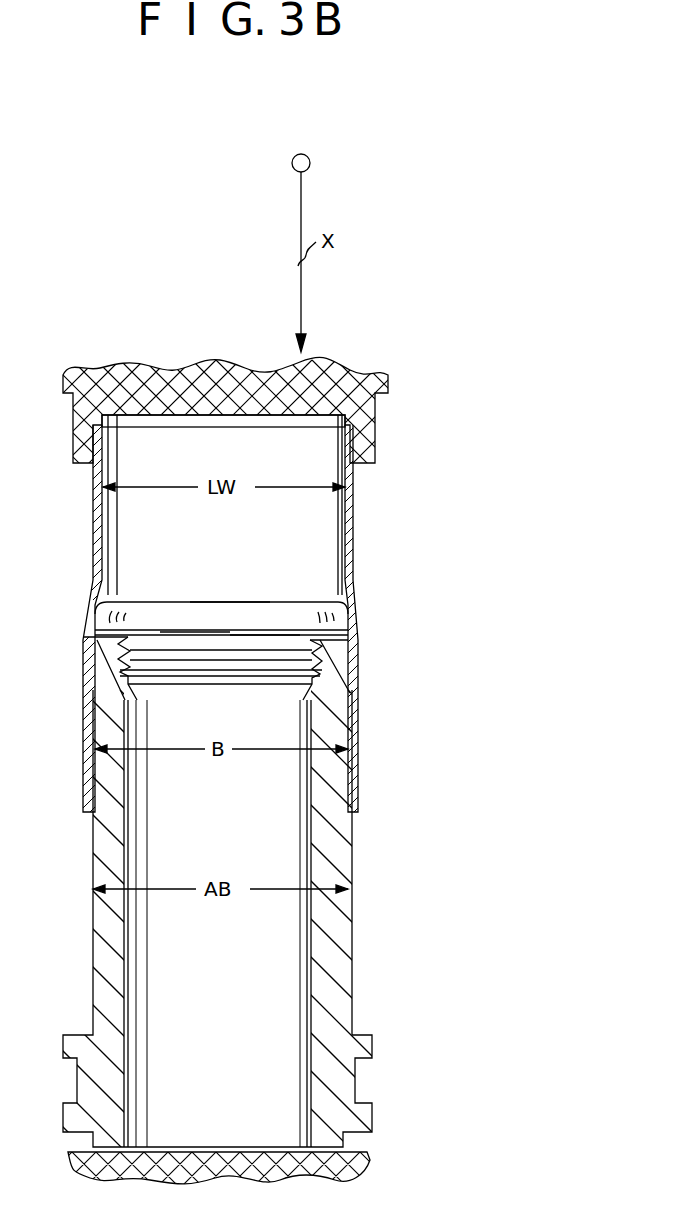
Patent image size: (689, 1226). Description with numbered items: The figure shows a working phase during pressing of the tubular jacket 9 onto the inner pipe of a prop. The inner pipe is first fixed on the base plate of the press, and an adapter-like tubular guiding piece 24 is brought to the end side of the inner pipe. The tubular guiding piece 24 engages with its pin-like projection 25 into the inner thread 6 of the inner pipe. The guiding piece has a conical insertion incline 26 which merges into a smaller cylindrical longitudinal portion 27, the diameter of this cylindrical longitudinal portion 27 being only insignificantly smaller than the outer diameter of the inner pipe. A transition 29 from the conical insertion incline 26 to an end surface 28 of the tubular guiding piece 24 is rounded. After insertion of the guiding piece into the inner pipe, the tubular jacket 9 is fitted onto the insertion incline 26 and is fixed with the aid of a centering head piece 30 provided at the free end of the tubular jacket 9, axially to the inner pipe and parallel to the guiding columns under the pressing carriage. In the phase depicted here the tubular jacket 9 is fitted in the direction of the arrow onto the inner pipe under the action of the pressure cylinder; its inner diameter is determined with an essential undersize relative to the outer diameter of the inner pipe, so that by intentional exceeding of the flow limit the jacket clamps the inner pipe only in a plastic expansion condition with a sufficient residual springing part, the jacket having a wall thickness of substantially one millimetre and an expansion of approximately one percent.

The centering head piece 30 is at (327, 367).
The tubular jacket 9 is at (349, 520).
The transition 29 is at (357, 607).
The conical insertion incline 26 is at (142, 613).
The pin-like projection 25 is at (192, 632).
The tubular guiding piece 24 is at (230, 596).
The cylindrical longitudinal portion 27 is at (248, 635).
The end surface 28 is at (293, 605).
The inner thread 6 is at (120, 658).